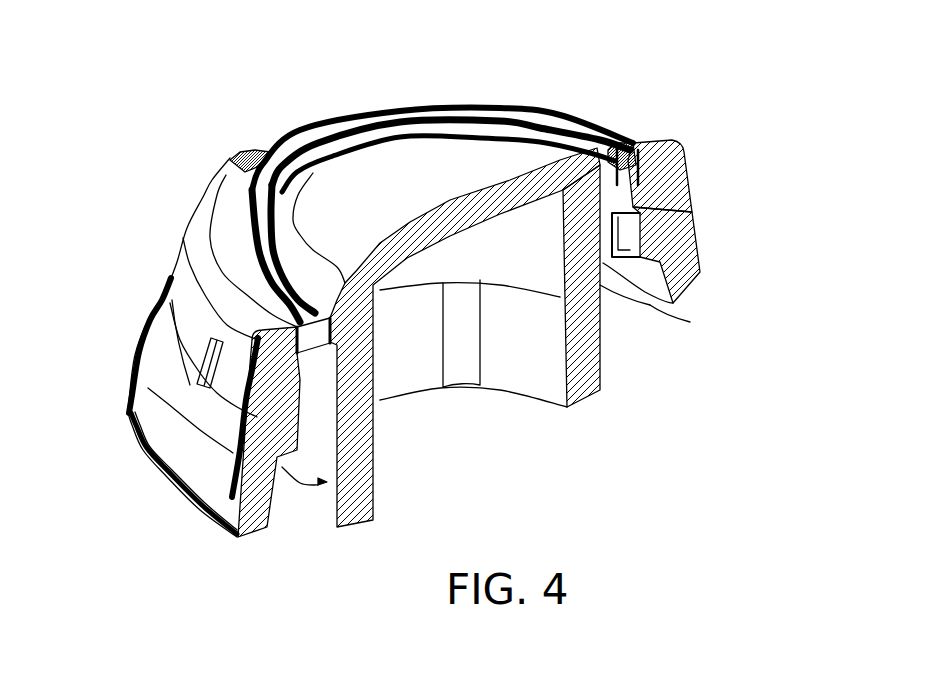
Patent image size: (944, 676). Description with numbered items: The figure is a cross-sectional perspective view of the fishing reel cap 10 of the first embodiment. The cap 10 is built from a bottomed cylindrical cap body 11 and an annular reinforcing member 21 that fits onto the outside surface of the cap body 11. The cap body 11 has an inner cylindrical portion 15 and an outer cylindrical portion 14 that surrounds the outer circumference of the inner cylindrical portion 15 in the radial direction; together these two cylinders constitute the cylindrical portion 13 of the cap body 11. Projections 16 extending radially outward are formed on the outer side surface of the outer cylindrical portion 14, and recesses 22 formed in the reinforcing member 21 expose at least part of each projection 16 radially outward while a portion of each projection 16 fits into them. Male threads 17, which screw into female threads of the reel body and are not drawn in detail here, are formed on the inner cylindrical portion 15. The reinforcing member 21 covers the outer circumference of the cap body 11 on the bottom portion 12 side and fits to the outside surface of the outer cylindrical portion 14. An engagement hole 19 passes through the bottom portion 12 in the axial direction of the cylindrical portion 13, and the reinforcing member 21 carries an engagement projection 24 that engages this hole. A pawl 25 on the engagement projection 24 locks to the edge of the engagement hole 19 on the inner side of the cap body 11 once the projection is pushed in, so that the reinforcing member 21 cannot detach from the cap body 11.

The cap 10 is at (557, 82).
The cap body 11 is at (137, 358).
The bottom portion 12 is at (400, 152).
The cylindrical portion 13 is at (788, 330).
The outer cylindrical portion 14 is at (703, 273).
The inner cylindrical portion 15 is at (600, 373).
The projections 16 is at (243, 153).
The male threads 17 is at (318, 485).
The engagement hole 19 is at (693, 207).
The annular reinforcing member 21 is at (203, 217).
The recesses 22 is at (293, 325).
The engagement projection 24 is at (603, 298).
The pawl 25 is at (625, 292).